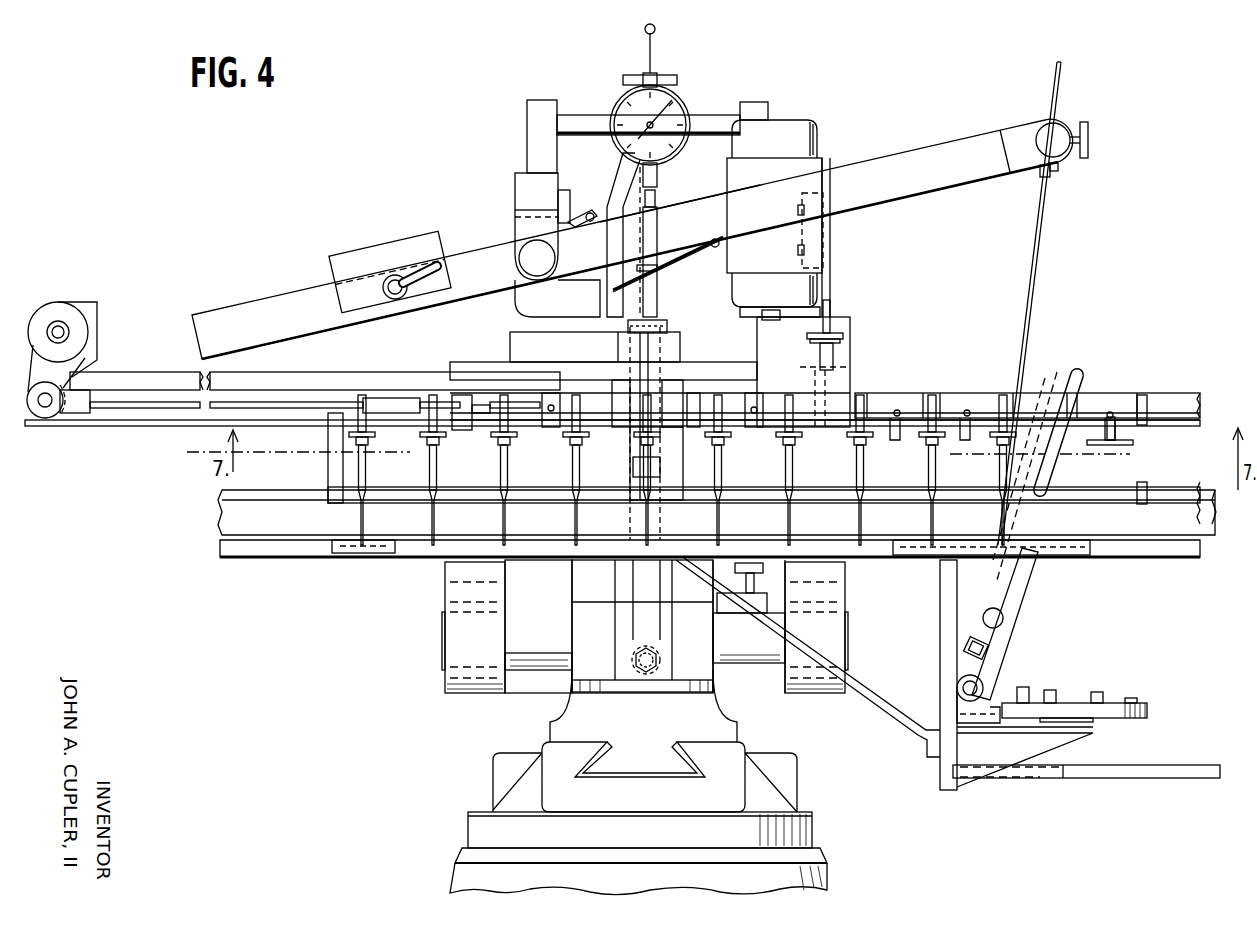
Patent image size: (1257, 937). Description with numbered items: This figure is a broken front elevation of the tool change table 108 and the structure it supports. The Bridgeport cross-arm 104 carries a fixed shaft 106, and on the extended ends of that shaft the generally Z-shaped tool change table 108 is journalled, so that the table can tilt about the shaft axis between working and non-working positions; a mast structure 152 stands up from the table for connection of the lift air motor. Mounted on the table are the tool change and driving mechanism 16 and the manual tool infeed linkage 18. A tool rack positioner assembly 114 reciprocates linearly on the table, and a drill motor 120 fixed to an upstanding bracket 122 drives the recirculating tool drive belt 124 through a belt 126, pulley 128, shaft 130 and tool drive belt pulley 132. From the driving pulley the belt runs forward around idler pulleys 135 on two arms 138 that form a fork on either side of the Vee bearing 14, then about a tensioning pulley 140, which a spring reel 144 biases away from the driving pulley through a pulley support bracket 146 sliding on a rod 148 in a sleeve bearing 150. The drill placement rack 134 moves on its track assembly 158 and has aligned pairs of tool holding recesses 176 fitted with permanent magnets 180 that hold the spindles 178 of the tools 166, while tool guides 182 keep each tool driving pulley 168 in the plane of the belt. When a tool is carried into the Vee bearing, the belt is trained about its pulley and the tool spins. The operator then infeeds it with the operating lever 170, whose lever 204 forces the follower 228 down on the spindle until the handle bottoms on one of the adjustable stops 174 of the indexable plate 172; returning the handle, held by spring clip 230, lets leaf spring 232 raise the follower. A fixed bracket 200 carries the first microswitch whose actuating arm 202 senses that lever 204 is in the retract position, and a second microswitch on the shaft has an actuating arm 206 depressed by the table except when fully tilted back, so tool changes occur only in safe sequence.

The Vee bearing 14 is at (657, 455).
The tool change and driving mechanism 16 is at (870, 285).
The manual tool infeed linkage 18 is at (490, 200).
The Bridgeport cross-arm 104 is at (582, 612).
The fixed shaft 106 is at (533, 653).
The tool change table 108 is at (425, 560).
The tool rack positioner assembly 114 is at (478, 363).
The drill motor 120 is at (820, 135).
The bracket 122 is at (832, 235).
The tool drive belt 124 is at (598, 440).
The belt 126 is at (840, 330).
The pulley 128 is at (843, 350).
The shaft 130 is at (850, 370).
The tool drive belt pulley 132 is at (813, 440).
The drill placement rack 134 is at (960, 398).
The idler pulleys 135 is at (685, 437).
The arms 138 is at (618, 385).
The tensioning pulley 140 is at (458, 445).
The spring reel 144 is at (55, 305).
The pulley support bracket 146 is at (455, 395).
The rod 148 is at (290, 385).
The sleeve bearing 150 is at (380, 395).
The mast structure 152 is at (542, 95).
The drill placement rack track assembly 158 is at (305, 492).
The tools 166 is at (930, 522).
The tool driving pulley 168 is at (665, 425).
The operating lever 170 is at (1012, 574).
The indexable plate 172 is at (1118, 718).
The adjustable stops 174 is at (1097, 690).
The tool holding recesses 176 is at (1148, 398).
The spindles 178 is at (930, 462).
The permanent magnets 180 is at (1143, 425).
The tool guides 182 is at (530, 445).
The fixed bracket 200 is at (520, 185).
The actuating arm 202 is at (592, 211).
The lever 204 is at (683, 212).
The actuating arm 206 is at (755, 578).
The follower 228 is at (650, 318).
The spring clip 230 is at (990, 650).
The leaf spring 232 is at (677, 270).